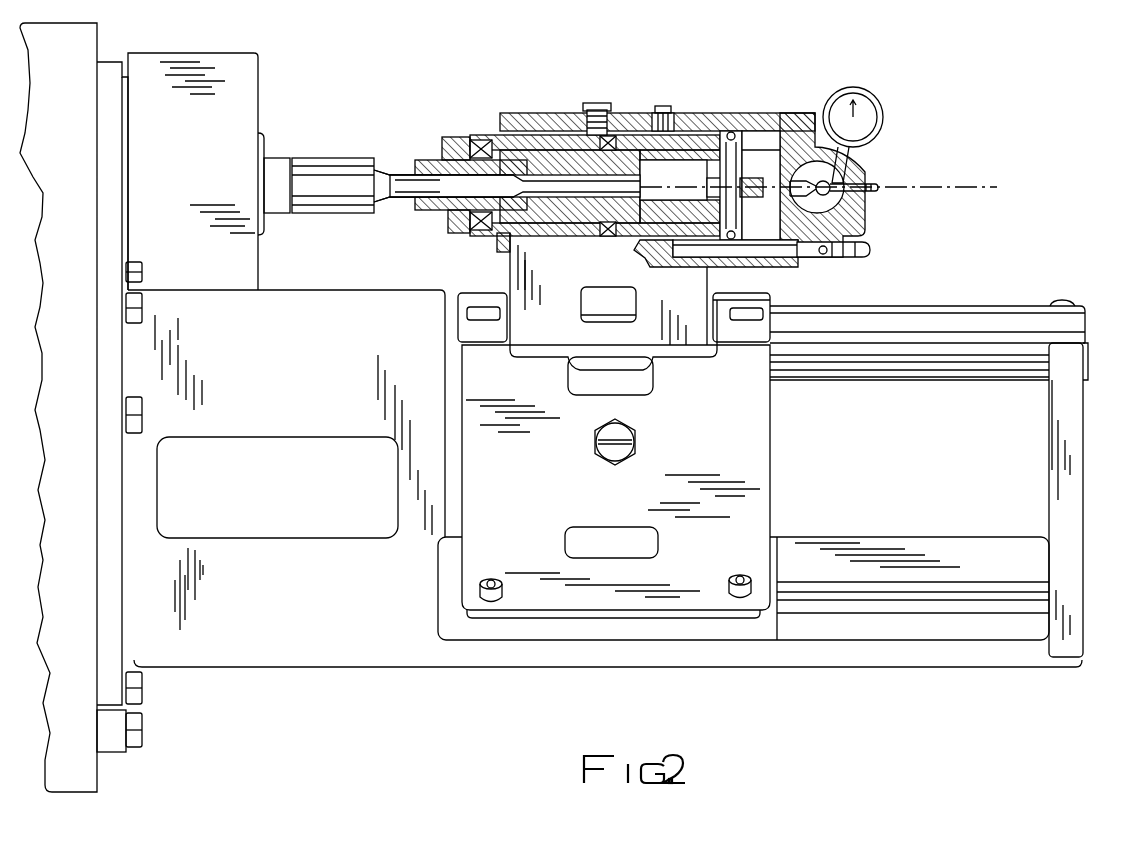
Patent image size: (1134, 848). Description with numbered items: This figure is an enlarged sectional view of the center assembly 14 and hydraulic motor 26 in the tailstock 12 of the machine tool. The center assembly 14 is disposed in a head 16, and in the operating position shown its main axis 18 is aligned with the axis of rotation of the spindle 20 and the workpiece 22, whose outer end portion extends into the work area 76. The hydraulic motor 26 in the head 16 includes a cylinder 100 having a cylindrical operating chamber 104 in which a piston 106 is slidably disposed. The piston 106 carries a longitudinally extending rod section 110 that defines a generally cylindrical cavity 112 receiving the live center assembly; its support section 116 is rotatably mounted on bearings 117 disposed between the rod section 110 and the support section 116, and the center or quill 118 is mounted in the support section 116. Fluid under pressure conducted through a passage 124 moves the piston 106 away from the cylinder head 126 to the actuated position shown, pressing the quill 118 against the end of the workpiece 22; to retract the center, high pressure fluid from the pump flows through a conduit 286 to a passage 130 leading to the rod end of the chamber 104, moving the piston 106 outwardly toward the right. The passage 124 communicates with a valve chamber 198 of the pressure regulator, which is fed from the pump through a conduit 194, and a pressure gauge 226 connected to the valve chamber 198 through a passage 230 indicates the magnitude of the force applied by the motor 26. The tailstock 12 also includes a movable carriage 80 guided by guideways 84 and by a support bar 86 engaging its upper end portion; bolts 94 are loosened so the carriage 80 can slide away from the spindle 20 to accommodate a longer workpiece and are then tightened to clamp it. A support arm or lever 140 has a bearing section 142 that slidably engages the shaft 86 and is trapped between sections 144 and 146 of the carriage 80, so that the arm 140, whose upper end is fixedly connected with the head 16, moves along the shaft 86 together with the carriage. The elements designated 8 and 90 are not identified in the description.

The end plate 8 is at (1104, 336).
The tailstock 12 is at (1062, 80).
The center assembly 14 is at (540, 155).
The head 16 is at (690, 70).
The main axis 18 is at (994, 186).
The spindle 20 is at (268, 138).
The workpiece 22 is at (348, 160).
The hydraulic motor 26 is at (762, 124).
The work area 76 is at (390, 128).
The movable carriage 80 is at (772, 466).
The guideways 84 is at (972, 542).
The support bar 86 is at (964, 372).
The drive coupling 90 is at (378, 76).
The bolts 94 is at (482, 308).
The cylinder 100 is at (660, 106).
The cylindrical operating chamber 104 is at (785, 143).
The piston 106 is at (750, 127).
The rod section 110 is at (497, 242).
The cylindrical cavity 112 is at (488, 135).
The support section 116 is at (432, 210).
The bearings 117 is at (483, 136).
The quill 118 is at (398, 172).
The passage 124 is at (866, 204).
The cylinder head 126 is at (866, 240).
The passage 130 is at (690, 252).
The support arm 140 is at (675, 352).
The bearing section 142 is at (716, 294).
The section of the carriage 144 is at (462, 322).
The section of the carriage 146 is at (770, 318).
The conduit 194 is at (880, 187).
The valve chamber 198 is at (830, 182).
The pressure gauge 226 is at (883, 102).
The passage 230 is at (848, 176).
The conduit 286 is at (872, 252).